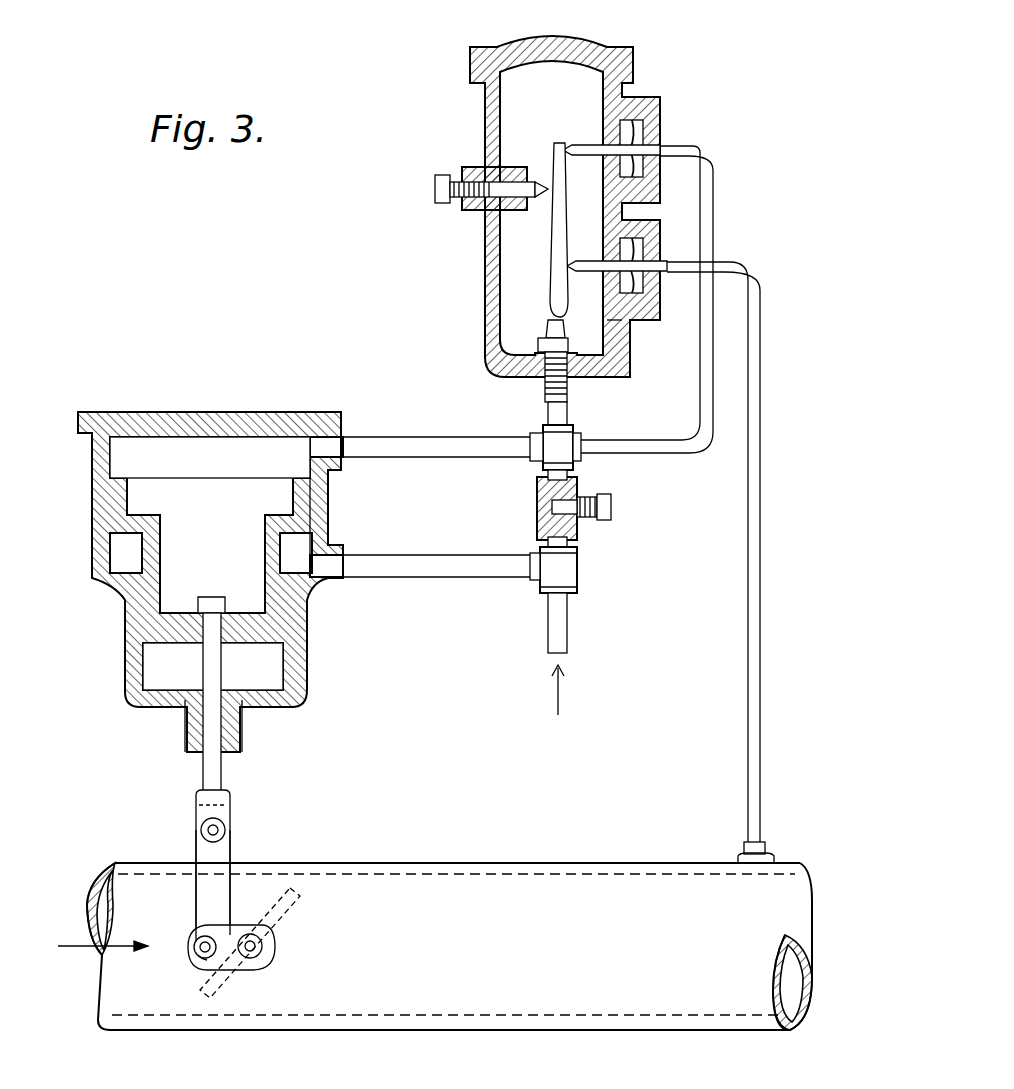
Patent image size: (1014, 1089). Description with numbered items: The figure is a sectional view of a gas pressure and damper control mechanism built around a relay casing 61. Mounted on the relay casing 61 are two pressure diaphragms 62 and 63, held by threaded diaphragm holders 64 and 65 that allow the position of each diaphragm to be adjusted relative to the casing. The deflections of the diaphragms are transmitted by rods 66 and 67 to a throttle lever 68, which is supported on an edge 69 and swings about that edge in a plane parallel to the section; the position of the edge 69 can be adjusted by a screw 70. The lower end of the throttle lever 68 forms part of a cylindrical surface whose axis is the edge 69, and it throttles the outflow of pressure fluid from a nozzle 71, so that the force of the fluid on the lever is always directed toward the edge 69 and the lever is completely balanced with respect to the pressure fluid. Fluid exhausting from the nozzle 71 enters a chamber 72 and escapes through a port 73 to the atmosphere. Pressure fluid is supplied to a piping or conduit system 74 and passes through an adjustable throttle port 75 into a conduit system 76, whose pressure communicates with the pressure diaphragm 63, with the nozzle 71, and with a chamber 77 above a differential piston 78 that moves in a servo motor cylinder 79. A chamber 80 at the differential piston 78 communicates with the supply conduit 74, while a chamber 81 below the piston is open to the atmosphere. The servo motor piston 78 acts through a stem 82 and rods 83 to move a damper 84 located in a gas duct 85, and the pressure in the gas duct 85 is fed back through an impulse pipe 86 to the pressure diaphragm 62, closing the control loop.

The relay casing 61 is at (485, 276).
The pressure diaphragm 62 is at (640, 288).
The pressure diaphragm 63 is at (636, 138).
The threaded diaphragm holder 64 is at (635, 318).
The threaded diaphragm holder 65 is at (636, 110).
The rod 66 is at (592, 264).
The rod 67 is at (577, 142).
The throttle lever 68 is at (554, 260).
The edge 69 is at (538, 200).
The screw 70 is at (435, 190).
The nozzle 71 is at (552, 320).
The chamber 72 is at (522, 106).
The port 73 is at (620, 376).
The piping or conduit system 74 is at (487, 572).
The adjustable throttle port 75 is at (535, 508).
The conduit system 76 is at (505, 412).
The chamber 77 is at (210, 458).
The differential piston 78 is at (152, 558).
The servo motor cylinder 79 is at (108, 508).
The chamber 80 is at (300, 548).
The chamber 81 is at (213, 666).
The stem 82 is at (222, 768).
The rod 83 is at (238, 932).
The damper 84 is at (296, 900).
The gas duct 85 is at (435, 946).
The impulse pipe 86 is at (748, 622).